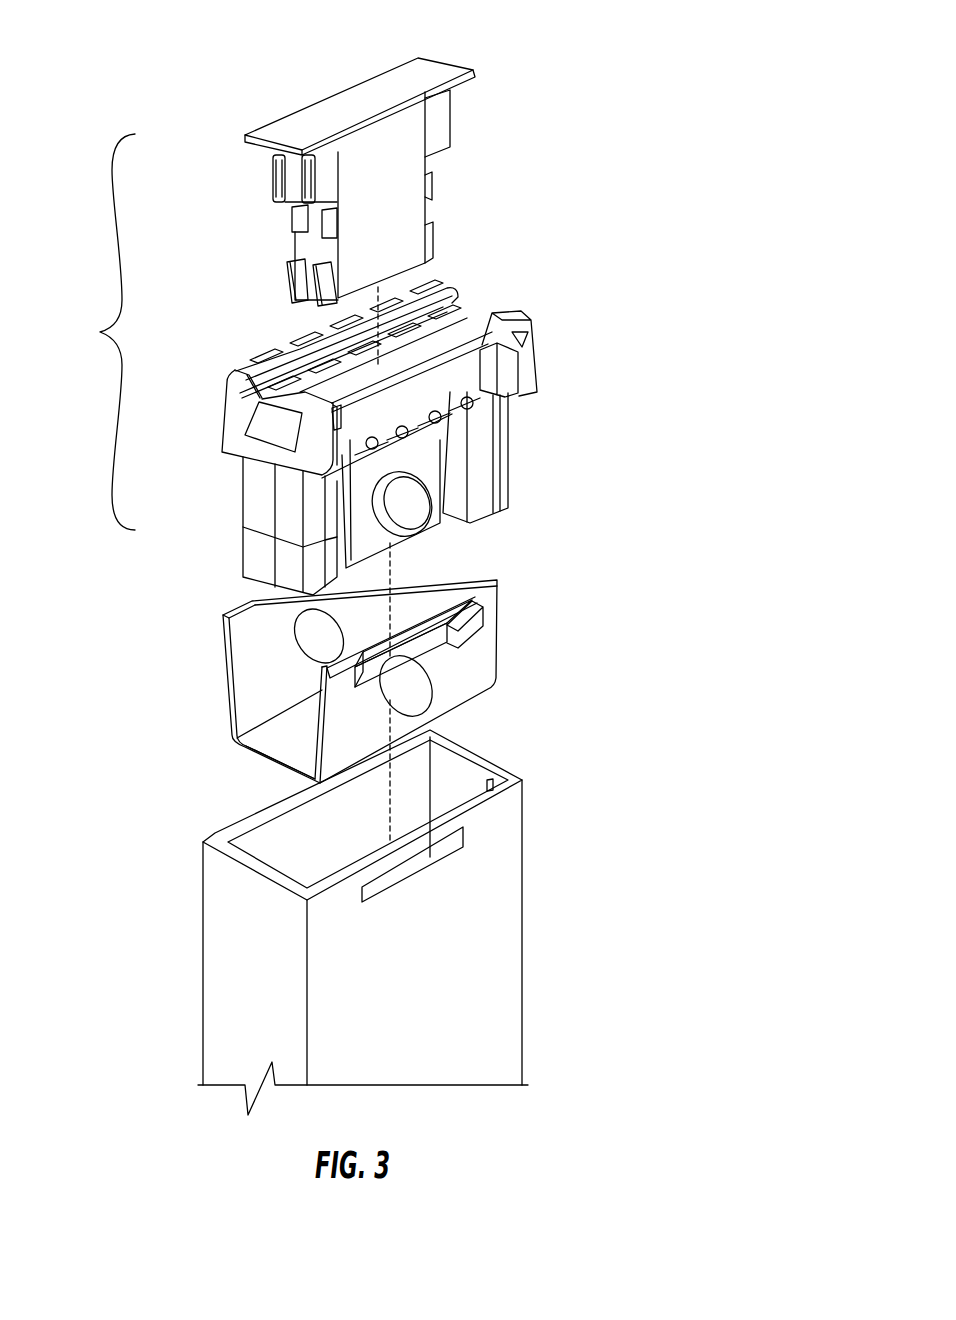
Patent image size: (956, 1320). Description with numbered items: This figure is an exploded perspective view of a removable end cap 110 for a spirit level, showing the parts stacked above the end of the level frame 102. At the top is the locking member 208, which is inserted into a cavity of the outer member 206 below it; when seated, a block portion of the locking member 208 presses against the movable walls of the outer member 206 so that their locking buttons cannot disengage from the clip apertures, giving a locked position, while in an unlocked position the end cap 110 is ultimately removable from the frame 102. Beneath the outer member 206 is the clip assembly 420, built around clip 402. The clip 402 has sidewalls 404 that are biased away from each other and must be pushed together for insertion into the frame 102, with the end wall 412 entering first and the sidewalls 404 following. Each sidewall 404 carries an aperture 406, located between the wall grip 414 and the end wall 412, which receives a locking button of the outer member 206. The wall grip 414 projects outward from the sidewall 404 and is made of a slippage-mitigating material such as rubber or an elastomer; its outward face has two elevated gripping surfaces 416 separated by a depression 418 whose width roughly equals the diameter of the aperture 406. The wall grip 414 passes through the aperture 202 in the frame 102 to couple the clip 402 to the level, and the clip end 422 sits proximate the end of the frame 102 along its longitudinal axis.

The end cap 110 is at (99, 332).
The locking member 208 is at (483, 62).
The outer member 206 is at (528, 302).
The mounting bracket assembly 420 is at (472, 560).
The clip 402 is at (387, 686).
The sidewalls 404 is at (345, 725).
The aperture 406 is at (407, 688).
The end wall 412 is at (305, 779).
The wall grip 414 is at (483, 615).
The elevated gripping surfaces 416 is at (450, 617).
The depression 418 is at (430, 657).
The end 422 is at (480, 663).
The frame 102 is at (437, 922).
The aperture 202 is at (466, 836).